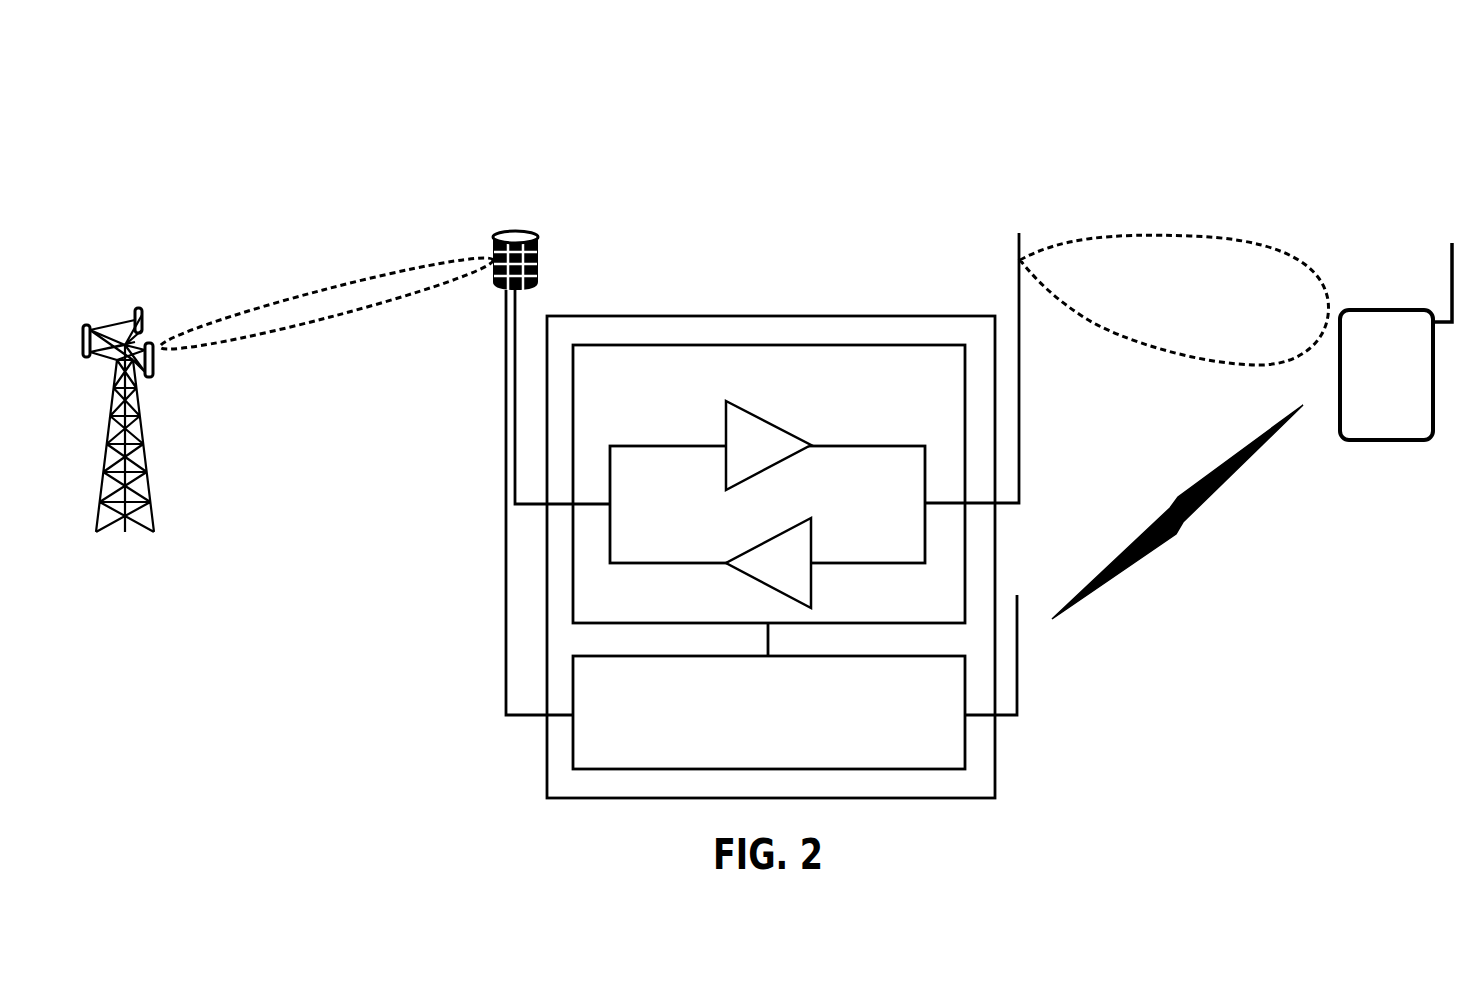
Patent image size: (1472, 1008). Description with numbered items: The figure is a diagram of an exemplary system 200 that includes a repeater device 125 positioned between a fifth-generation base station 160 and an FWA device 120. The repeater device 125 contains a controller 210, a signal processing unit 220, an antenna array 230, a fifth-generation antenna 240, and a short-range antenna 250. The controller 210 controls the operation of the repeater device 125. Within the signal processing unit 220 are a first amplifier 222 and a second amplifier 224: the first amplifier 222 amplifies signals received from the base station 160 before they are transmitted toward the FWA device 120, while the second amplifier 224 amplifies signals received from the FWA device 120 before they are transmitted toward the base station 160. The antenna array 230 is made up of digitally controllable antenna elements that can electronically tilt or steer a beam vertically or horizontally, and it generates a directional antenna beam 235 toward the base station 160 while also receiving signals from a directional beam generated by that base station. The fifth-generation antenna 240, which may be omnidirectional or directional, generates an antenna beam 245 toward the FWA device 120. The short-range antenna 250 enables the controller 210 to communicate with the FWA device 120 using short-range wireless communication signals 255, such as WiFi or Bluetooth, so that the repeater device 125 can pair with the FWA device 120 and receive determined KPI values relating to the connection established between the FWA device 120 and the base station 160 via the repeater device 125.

The system 200 is at (281, 104).
The 5G base station 160 is at (113, 327).
The directional antenna beam 235 is at (301, 298).
The antenna array 230 is at (540, 258).
The repeater device 125 is at (762, 315).
The signal processing unit 220 is at (769, 484).
The first amplifier 222 is at (768, 445).
The second amplifier 224 is at (768, 563).
The controller 210 is at (769, 696).
The 5G antenna 240 is at (1013, 258).
The antenna beam 245 is at (1189, 236).
The short-range antenna 250 is at (1020, 656).
The short-range wireless communication signals 255 is at (1183, 527).
The FWA device 120 is at (1385, 308).